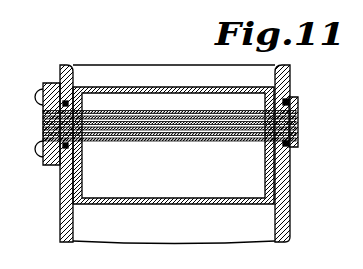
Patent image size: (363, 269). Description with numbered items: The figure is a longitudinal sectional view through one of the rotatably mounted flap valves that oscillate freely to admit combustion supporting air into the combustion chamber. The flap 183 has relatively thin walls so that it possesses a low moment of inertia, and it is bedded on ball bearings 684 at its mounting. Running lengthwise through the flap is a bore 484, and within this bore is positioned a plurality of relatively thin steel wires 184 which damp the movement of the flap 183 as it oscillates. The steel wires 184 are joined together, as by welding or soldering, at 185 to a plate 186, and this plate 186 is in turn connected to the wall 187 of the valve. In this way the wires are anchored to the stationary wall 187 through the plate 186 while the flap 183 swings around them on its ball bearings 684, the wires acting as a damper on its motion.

The flap valve 183 is at (172, 203).
The steel wires 184 is at (137, 133).
The joint 185 is at (298, 136).
The plate 186 is at (46, 105).
The wall 187 is at (61, 210).
The bore 484 is at (122, 110).
The ball bearings 684 is at (291, 100).